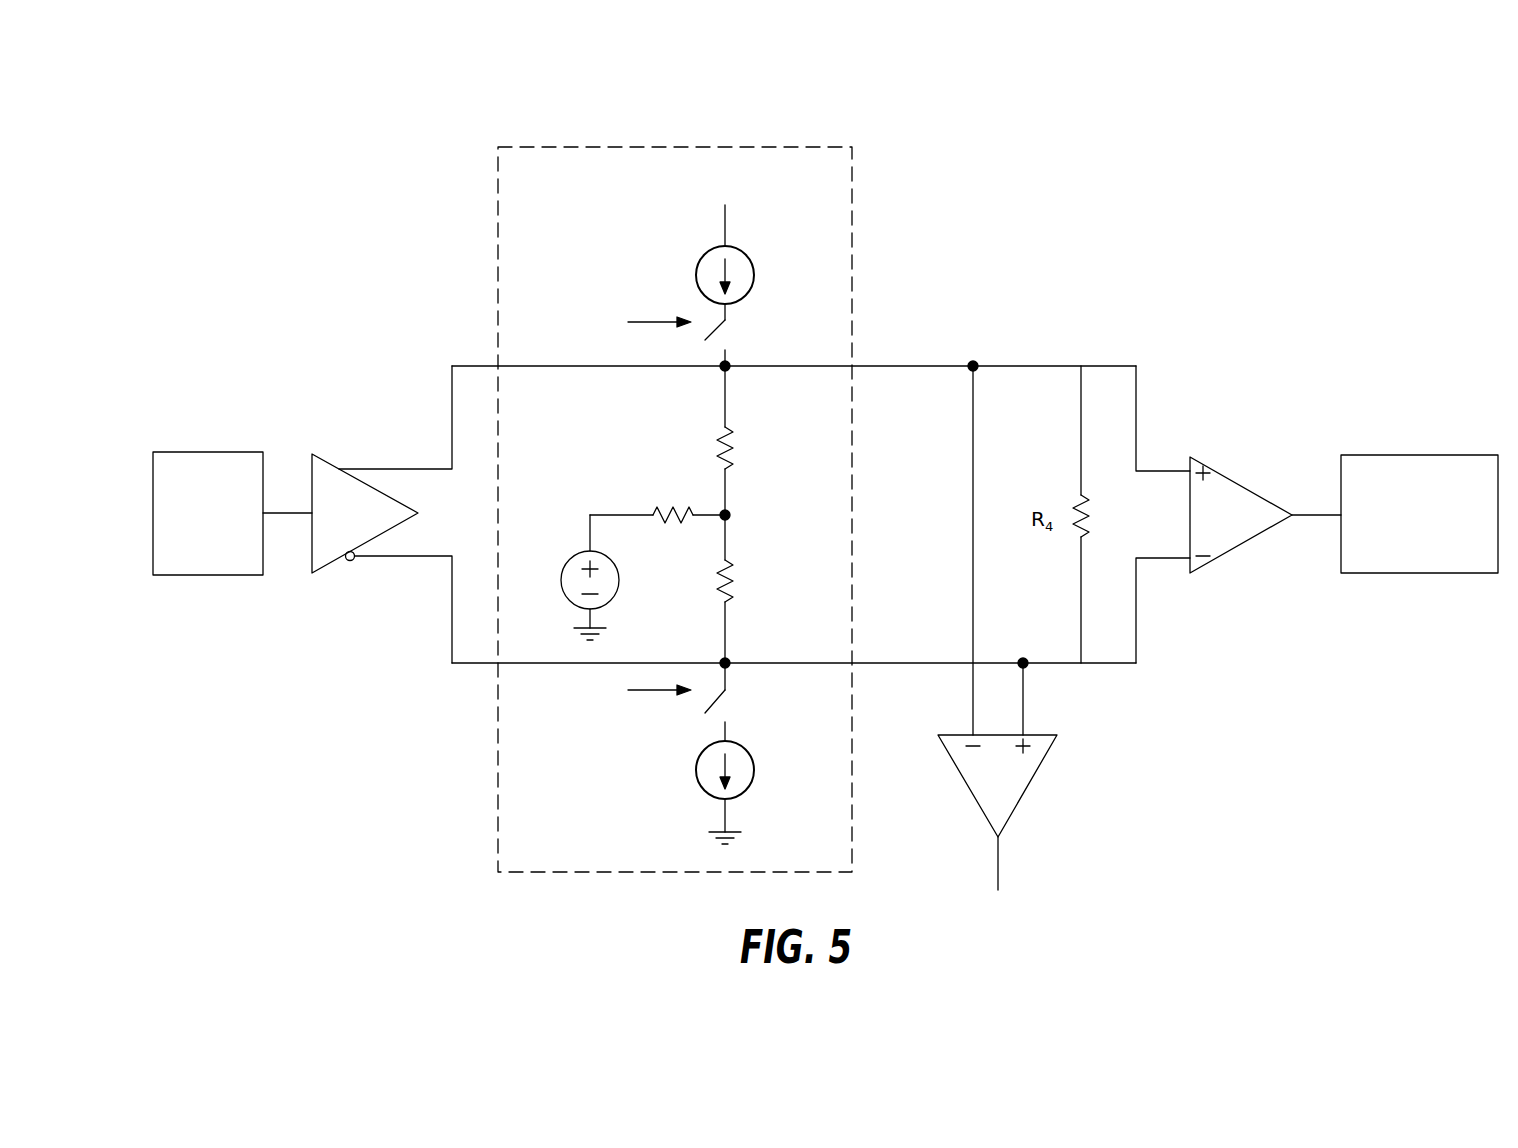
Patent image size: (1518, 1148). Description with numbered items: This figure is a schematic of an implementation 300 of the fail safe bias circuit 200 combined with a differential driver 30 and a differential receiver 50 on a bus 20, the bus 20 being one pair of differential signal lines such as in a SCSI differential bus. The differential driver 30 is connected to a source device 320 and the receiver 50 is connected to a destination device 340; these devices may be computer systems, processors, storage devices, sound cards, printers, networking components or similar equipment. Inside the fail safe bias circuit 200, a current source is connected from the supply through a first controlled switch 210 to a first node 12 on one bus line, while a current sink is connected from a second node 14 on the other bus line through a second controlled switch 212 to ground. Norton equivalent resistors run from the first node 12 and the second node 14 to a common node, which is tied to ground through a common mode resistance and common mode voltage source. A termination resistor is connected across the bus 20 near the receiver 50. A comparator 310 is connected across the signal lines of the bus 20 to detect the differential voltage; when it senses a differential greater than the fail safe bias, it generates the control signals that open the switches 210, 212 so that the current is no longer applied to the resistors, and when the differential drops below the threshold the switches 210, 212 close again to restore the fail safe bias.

The implementation 300 is at (1036, 205).
The fail safe bias circuit 200 is at (805, 147).
The first controlled switch 210 is at (727, 338).
The second controlled switch 212 is at (728, 702).
The first node 12 is at (729, 370).
The second node 14 is at (729, 659).
The bus 20 is at (897, 370).
The source device 320 is at (188, 452).
The differential driver 30 is at (327, 458).
The differential receiver 50 is at (1205, 460).
The destination device 340 is at (1405, 455).
The comparator 310 is at (1043, 762).